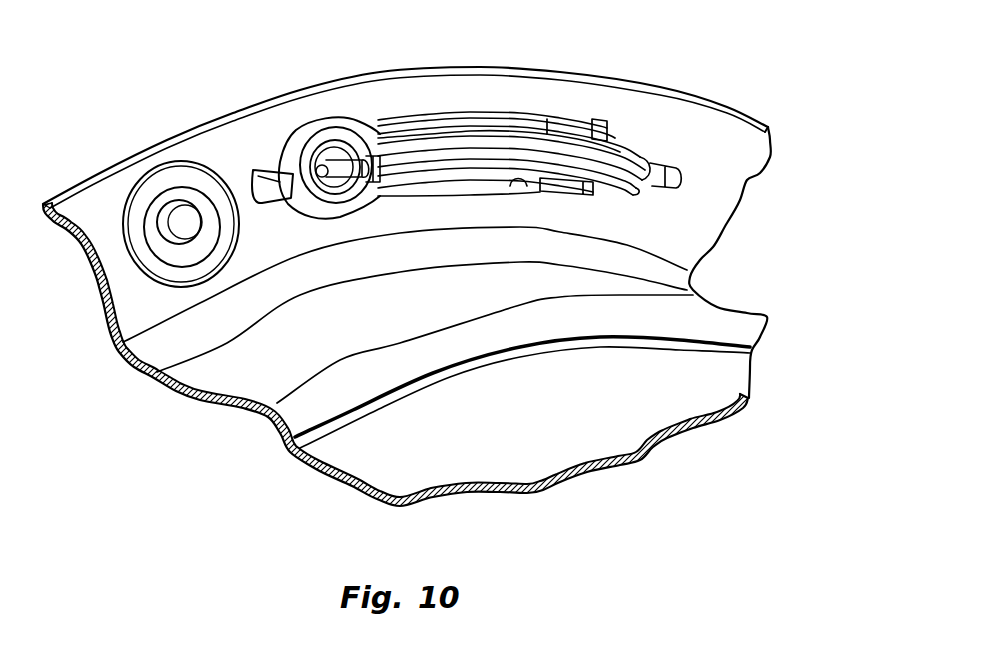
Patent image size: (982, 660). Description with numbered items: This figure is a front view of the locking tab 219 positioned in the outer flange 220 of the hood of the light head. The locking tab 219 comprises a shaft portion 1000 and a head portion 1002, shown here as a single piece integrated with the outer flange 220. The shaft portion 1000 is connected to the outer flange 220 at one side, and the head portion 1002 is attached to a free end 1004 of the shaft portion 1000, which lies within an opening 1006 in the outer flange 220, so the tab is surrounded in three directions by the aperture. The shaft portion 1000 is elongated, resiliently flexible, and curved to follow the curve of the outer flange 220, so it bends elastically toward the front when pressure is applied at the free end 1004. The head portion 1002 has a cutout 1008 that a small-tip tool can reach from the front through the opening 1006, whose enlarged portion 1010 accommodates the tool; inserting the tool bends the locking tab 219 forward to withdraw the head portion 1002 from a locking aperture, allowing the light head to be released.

The outer flange 220 is at (703, 133).
The locking tab 219 is at (450, 138).
The shaft portion 1000 is at (527, 150).
The head portion 1002 is at (310, 135).
The free end 1004 is at (390, 163).
The opening 1006 is at (527, 187).
The cutout 1008 is at (267, 175).
The enlarged portion 1010 is at (268, 195).